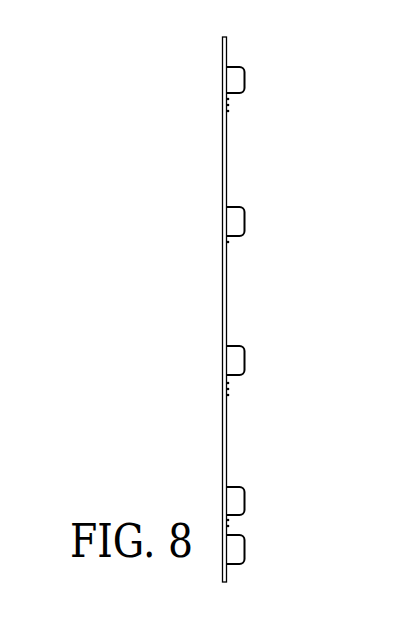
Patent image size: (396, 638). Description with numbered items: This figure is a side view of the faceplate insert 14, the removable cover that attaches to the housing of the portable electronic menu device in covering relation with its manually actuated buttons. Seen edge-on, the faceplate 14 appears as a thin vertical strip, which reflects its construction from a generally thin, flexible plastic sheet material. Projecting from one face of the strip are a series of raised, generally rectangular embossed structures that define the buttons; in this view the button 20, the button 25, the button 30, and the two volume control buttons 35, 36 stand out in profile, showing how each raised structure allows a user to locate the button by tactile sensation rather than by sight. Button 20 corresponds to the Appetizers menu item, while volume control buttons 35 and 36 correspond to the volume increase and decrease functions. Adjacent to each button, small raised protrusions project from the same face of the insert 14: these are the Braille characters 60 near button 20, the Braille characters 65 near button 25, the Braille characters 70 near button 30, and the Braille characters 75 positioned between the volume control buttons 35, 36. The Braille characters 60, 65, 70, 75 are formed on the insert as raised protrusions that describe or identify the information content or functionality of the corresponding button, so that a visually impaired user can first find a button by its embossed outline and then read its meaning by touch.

The faceplate insert 14 is at (222, 193).
The button 20 is at (245, 86).
The button 25 is at (245, 218).
The button 30 is at (245, 363).
The volume control button 35 is at (245, 503).
The volume control button 36 is at (245, 551).
The Braille characters 60 is at (229, 113).
The Braille characters 65 is at (229, 247).
The Braille characters 70 is at (229, 392).
The Braille characters 75 is at (229, 523).